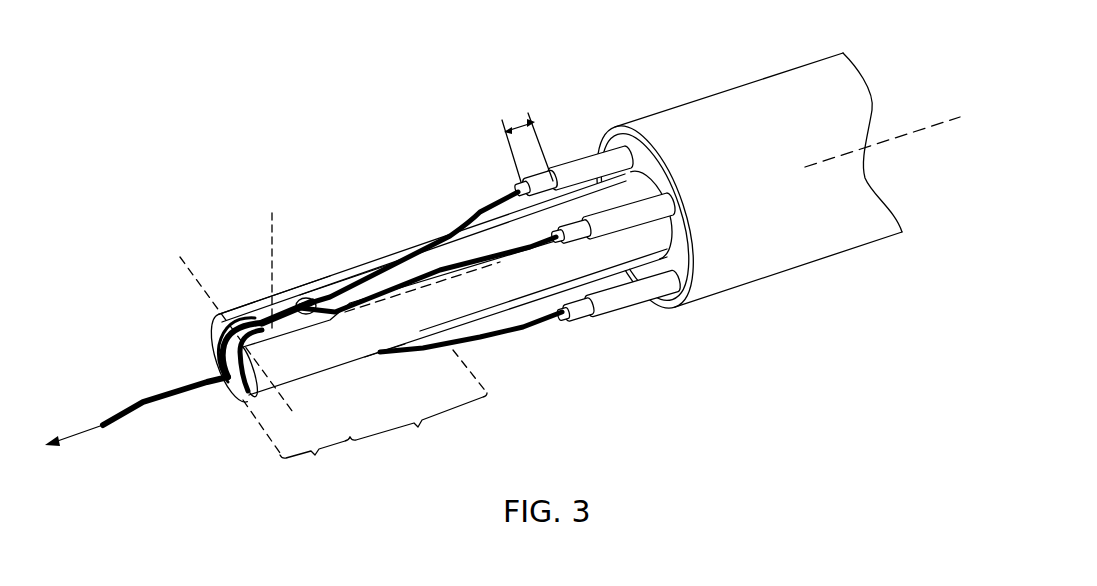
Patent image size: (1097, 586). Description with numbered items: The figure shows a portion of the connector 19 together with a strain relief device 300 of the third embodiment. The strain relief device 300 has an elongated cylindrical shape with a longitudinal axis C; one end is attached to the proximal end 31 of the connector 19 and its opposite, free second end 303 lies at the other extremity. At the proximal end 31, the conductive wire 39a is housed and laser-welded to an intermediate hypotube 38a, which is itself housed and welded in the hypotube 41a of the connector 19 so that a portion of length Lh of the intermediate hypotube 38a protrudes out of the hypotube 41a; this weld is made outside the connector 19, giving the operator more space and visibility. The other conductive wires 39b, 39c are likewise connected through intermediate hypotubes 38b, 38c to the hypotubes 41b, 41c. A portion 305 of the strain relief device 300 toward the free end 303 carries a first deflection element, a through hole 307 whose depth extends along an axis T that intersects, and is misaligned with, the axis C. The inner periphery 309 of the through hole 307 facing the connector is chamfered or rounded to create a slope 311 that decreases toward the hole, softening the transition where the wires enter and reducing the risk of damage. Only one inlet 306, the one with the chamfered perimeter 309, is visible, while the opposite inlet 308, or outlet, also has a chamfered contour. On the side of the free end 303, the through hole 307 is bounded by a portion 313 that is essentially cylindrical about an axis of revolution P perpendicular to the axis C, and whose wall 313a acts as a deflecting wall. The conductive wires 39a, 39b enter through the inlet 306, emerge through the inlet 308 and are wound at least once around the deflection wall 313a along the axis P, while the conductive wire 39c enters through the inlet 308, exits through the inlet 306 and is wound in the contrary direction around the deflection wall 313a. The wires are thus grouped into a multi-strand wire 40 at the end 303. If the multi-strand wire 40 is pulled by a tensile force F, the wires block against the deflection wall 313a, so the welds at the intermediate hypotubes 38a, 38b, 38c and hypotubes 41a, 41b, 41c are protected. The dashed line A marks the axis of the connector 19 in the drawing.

The connector 19 is at (750, 98).
The proximal end 31 is at (655, 163).
The strain relief device 300 is at (430, 175).
The second end 303 is at (678, 237).
The portion 305 is at (418, 406).
The inlet 306 is at (262, 310).
The through hole 307 is at (307, 304).
The inlet 308 is at (383, 358).
The inner periphery 309 is at (333, 290).
The slope 311 is at (358, 272).
The portion 313 is at (296, 447).
The deflection wall 313a is at (210, 348).
The intermediate hypotube 38a is at (547, 173).
The intermediate hypotube 38b is at (572, 245).
The intermediate hypotube 38c is at (583, 317).
The conductive wire 39a is at (480, 207).
The conductive wire 39b is at (497, 262).
The conductive wire 39c is at (523, 330).
The multi-strand wire 40 is at (143, 412).
The hypotube 41a is at (597, 160).
The hypotube 41b is at (675, 197).
The hypotube 41c is at (650, 290).
The axis A is at (933, 118).
The axis C is at (393, 300).
The tensile force F is at (62, 436).
The axis of revolution P is at (270, 378).
The axis T is at (270, 230).
The length Lh is at (525, 132).